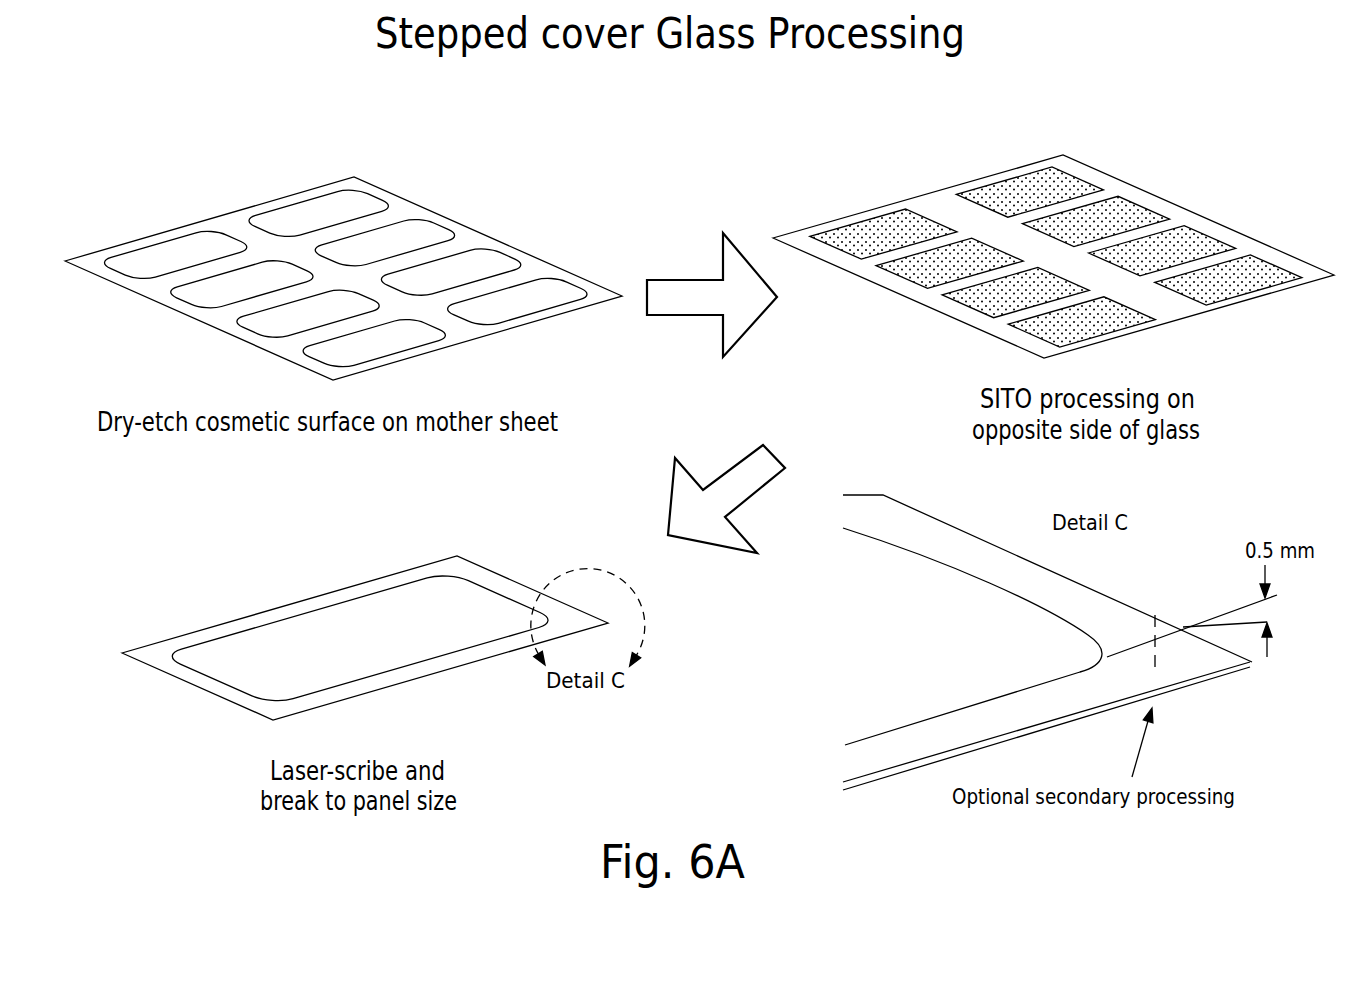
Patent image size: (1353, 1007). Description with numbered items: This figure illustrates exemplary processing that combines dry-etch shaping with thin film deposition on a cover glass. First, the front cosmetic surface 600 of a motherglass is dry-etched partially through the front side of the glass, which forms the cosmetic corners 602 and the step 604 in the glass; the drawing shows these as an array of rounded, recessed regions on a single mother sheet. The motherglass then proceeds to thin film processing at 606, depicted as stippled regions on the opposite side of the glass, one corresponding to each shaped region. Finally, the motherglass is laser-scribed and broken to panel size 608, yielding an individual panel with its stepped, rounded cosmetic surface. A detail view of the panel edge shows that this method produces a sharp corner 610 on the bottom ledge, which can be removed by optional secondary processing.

The front cosmetic surface 600 is at (290, 218).
The cosmetic corners 602 is at (393, 212).
The step 604 is at (465, 240).
The thin film processing 606 is at (1005, 185).
The panel size 608 is at (323, 627).
The sharp corner 610 is at (1225, 677).